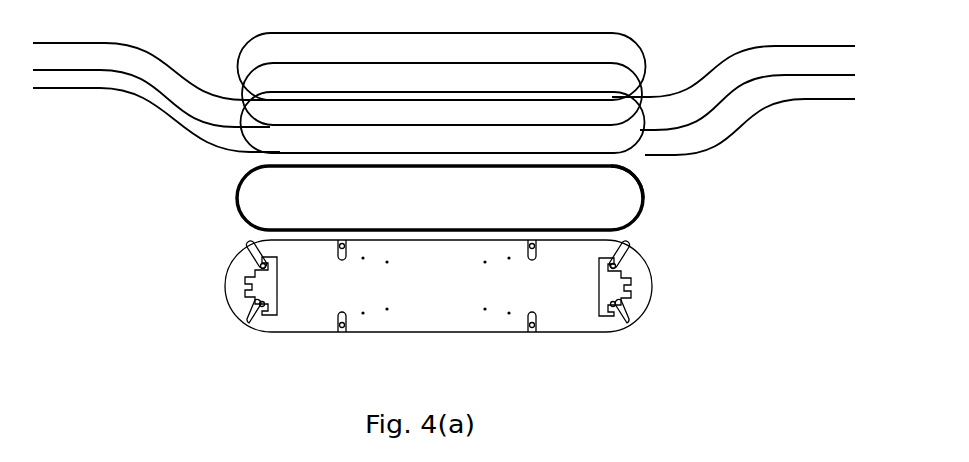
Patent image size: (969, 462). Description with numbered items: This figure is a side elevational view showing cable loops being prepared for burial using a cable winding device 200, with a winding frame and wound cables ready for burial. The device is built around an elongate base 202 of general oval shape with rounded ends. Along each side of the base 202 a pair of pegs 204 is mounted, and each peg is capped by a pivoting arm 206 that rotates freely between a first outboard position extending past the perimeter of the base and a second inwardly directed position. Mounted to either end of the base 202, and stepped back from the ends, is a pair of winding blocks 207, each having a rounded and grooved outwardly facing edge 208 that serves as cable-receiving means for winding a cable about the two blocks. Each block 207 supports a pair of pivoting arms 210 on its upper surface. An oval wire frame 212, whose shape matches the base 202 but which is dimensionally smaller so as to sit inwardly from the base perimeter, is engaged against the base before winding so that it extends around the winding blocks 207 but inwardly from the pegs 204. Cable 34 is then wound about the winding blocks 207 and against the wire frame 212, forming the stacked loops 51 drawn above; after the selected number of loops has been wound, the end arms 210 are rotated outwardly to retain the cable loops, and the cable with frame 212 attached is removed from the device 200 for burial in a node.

The coil wire / conductor loops 34 is at (240, 122).
The ferrite core (antenna core) 51 is at (642, 212).
The oval wire frame 212 is at (233, 198).
The cable winding device 200 is at (445, 316).
The elongate base 202 is at (438, 286).
The pegs 204 is at (343, 328).
The pivoting arm 206 is at (338, 318).
The winding blocks 207 is at (253, 290).
The rounded and grooved outwardly facing edge 208 is at (247, 273).
The pivoting arms 210 is at (260, 307).